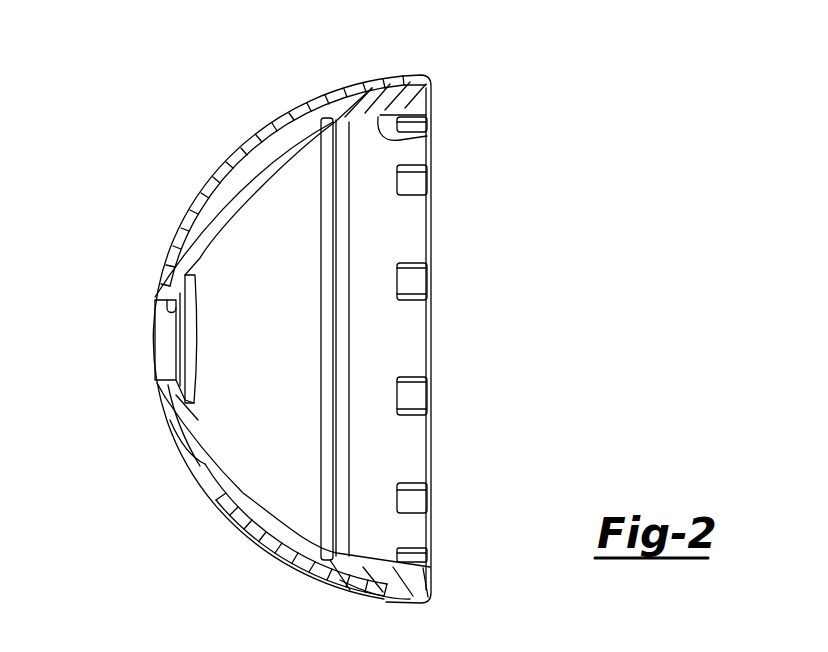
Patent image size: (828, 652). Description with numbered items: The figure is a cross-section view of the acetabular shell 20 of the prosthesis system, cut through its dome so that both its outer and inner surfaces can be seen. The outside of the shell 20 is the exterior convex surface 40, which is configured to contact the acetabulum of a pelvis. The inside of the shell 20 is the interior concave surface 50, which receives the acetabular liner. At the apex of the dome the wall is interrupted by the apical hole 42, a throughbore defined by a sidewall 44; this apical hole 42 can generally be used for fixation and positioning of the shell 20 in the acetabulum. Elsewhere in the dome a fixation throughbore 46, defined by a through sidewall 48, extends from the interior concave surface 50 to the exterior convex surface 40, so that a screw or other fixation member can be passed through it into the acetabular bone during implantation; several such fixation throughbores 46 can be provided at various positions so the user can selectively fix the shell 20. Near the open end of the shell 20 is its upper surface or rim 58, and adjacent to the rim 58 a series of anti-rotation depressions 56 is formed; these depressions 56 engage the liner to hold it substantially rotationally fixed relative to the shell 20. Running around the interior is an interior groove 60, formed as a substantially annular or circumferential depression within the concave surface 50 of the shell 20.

The shell 20 is at (477, 94).
The exterior convex surface 40 is at (212, 177).
The apical hole 42 is at (160, 348).
The sidewall 44 is at (178, 312).
The fixation throughbore 46 is at (187, 473).
The through sidewall 48 is at (183, 447).
The interior concave surface 50 is at (400, 127).
The anti-rotation depression 56 is at (417, 178).
The rim 58 is at (430, 580).
The interior groove 60 is at (333, 117).